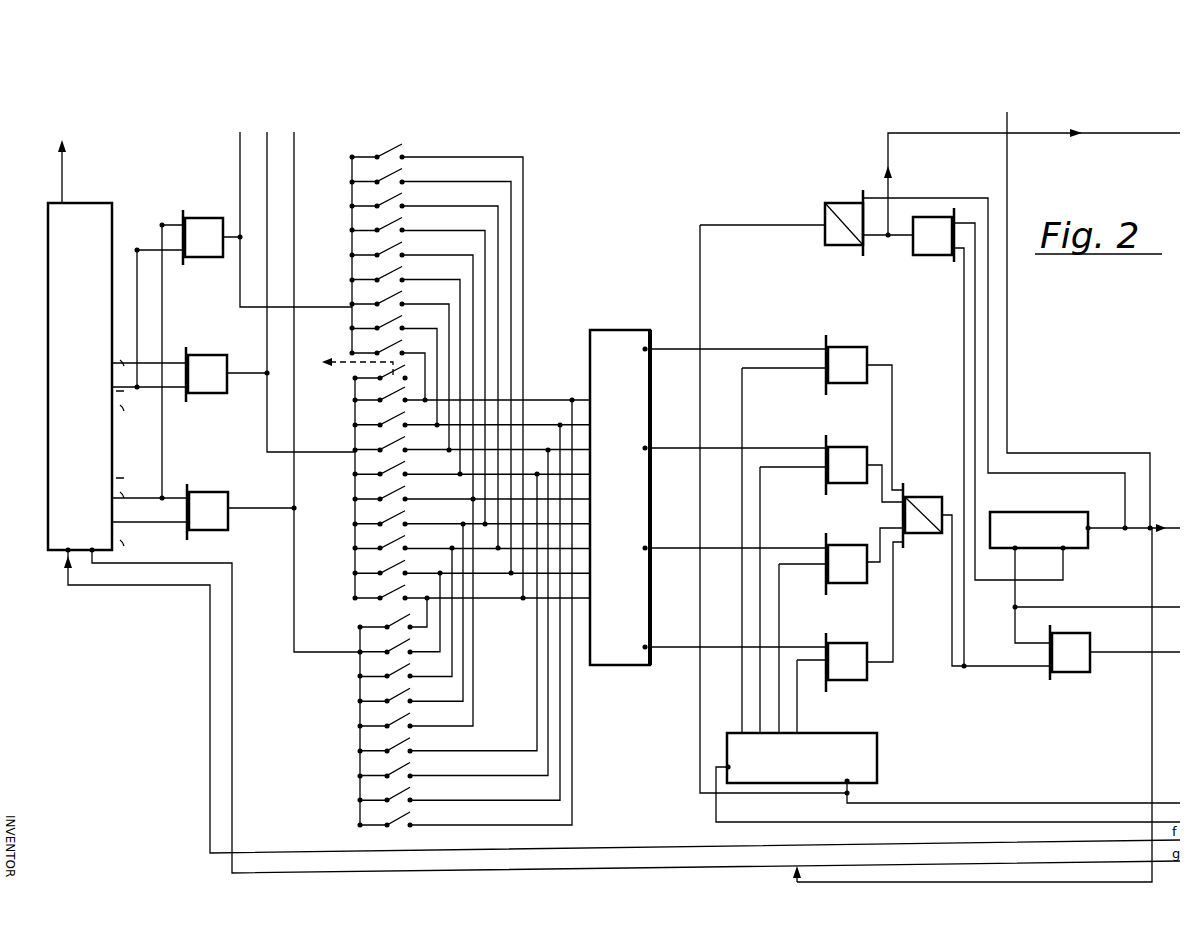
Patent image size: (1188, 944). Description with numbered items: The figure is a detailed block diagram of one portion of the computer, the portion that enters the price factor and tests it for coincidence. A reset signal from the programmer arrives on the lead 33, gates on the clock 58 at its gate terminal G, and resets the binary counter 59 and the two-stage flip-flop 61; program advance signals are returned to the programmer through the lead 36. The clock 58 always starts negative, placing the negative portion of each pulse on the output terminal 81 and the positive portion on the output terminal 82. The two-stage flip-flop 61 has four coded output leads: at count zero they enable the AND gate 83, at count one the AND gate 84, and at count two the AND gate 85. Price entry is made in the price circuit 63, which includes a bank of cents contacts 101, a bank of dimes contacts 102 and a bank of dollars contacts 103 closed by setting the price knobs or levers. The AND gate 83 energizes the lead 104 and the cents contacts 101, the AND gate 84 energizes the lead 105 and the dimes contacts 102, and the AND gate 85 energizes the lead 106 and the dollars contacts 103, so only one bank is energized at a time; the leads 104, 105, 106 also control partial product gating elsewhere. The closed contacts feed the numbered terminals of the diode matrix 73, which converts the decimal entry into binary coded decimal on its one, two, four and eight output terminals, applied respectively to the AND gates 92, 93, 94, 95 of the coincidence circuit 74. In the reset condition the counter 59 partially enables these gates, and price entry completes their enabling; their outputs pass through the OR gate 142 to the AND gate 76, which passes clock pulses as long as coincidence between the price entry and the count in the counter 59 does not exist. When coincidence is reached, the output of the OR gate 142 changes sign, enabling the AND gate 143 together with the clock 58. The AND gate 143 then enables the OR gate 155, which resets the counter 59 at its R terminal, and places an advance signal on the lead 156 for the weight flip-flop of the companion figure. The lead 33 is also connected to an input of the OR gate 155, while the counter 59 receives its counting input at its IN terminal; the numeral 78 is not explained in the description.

The lead 36 is at (63, 180).
The two-stage flip-flop 61 is at (108, 207).
The AND gate 83 is at (204, 259).
The AND gate 84 is at (210, 349).
The AND gate 85 is at (200, 492).
The lead 104 is at (242, 181).
The lead 105 is at (268, 430).
The lead 106 is at (294, 620).
The bank of cents contacts 101 is at (344, 250).
The bank of dimes contacts 102 is at (348, 543).
The bank of dollars contacts 103 is at (354, 748).
The price circuit 63 is at (540, 304).
The diode matrix 73 is at (602, 329).
The coincidence circuit 74 is at (910, 362).
The AND gate 92 is at (850, 345).
The AND gate 93 is at (850, 445).
The AND gate 94 is at (850, 543).
The AND gate 95 is at (850, 641).
The OR gate 142 is at (915, 497).
The OR gate 155 is at (837, 202).
The lead 156 is at (890, 193).
The AND gate 143 is at (930, 257).
The clock 58 is at (1044, 513).
The lead 33 is at (1169, 524).
The output terminal 81 is at (1018, 552).
The output terminal 82 is at (1066, 552).
The AND gate 76 is at (1075, 674).
The binary counter 59 is at (877, 763).
The counter input conductor 78 is at (714, 812).